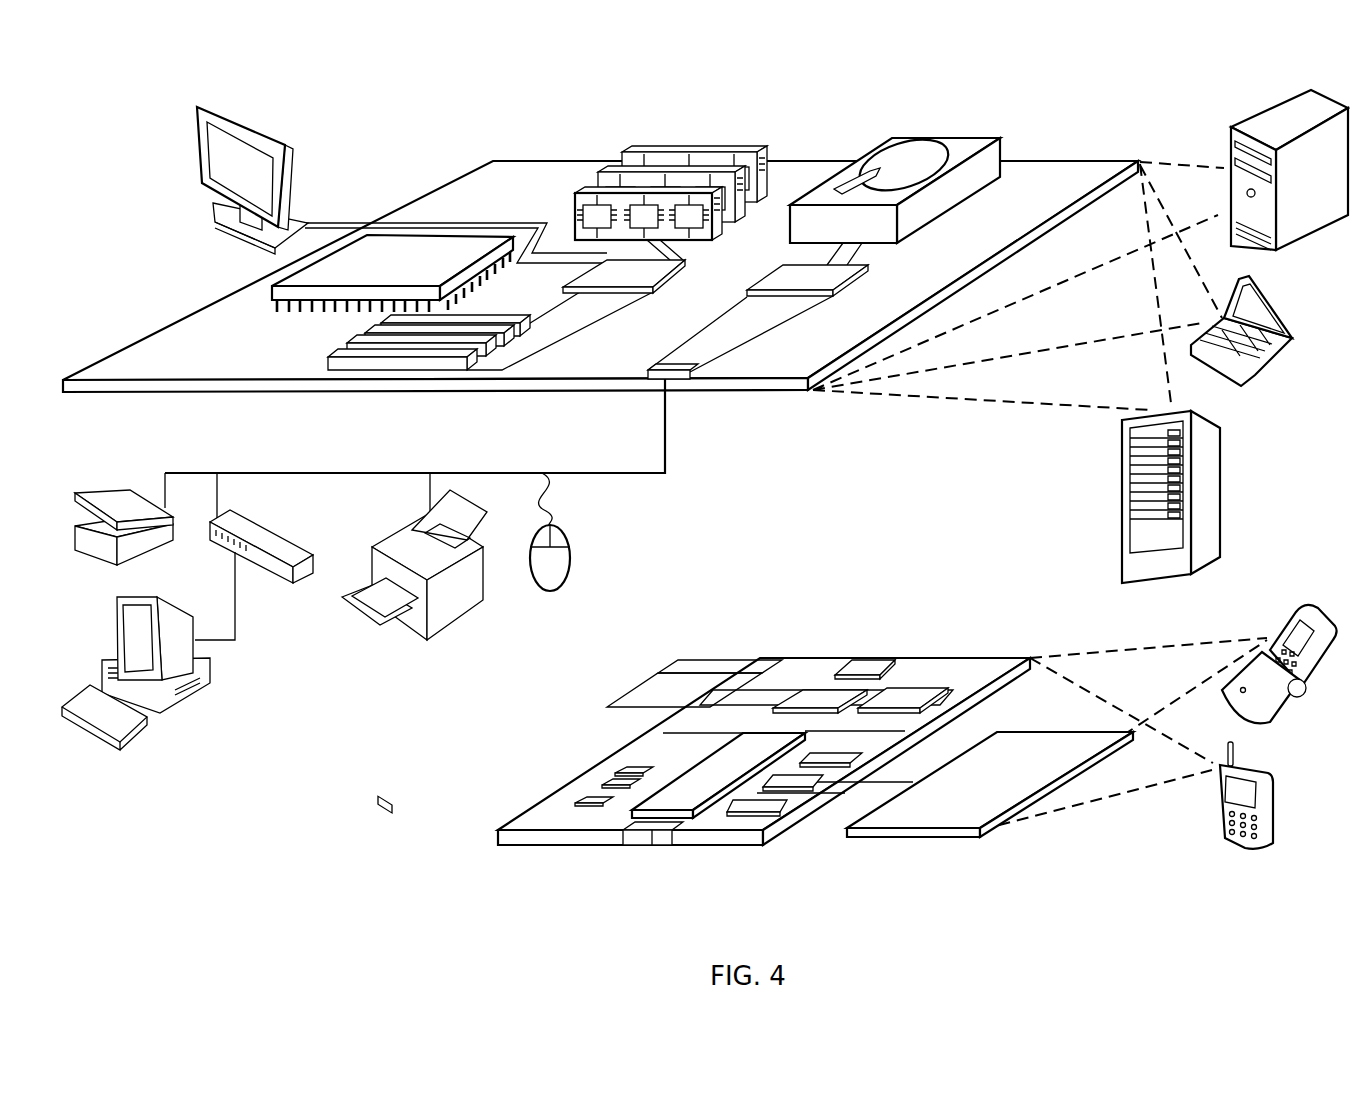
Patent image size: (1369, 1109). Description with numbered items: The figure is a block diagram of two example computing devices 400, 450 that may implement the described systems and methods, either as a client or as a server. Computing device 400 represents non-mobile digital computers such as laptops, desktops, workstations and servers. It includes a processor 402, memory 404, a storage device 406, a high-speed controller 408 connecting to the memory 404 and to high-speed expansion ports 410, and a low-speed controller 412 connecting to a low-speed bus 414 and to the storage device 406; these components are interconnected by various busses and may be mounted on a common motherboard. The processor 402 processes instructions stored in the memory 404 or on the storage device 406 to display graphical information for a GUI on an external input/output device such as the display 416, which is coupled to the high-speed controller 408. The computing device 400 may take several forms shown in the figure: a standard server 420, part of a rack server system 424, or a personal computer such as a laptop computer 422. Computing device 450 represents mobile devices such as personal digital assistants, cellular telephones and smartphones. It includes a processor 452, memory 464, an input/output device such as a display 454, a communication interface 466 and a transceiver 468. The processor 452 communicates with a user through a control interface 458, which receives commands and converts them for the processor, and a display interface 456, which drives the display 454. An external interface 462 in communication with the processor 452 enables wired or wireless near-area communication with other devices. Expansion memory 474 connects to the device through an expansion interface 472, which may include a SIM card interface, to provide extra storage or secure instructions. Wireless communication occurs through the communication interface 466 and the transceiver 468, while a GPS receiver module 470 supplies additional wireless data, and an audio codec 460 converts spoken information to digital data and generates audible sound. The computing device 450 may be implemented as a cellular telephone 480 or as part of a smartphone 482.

The computing device 400 is at (98, 114).
The processor 402 is at (280, 292).
The memory 404 is at (628, 156).
The storage device 406 is at (891, 150).
The high-speed controller 408 is at (602, 272).
The high-speed expansion ports 410 is at (358, 350).
The low-speed controller 412 is at (780, 268).
The low-speed bus 414 is at (673, 382).
The display 416 is at (203, 108).
The standard server 420 is at (1231, 147).
The laptop computer 422 is at (1290, 305).
The rack server system 424 is at (1124, 515).
The computing device 450 is at (466, 850).
The processor 452 is at (689, 798).
The display 454 is at (943, 818).
The display interface 456 is at (764, 812).
The control interface 458 is at (817, 778).
The audio codec 460 is at (829, 758).
The external interface 462 is at (652, 832).
The memory 464 is at (603, 792).
The communication interface 466 is at (820, 700).
The transceiver 468 is at (905, 697).
The GPS receiver module 470 is at (868, 660).
The expansion interface 472 is at (738, 673).
The expansion memory 474 is at (660, 673).
The cellular telephone 480 is at (1285, 613).
The smartphone 482 is at (1215, 801).